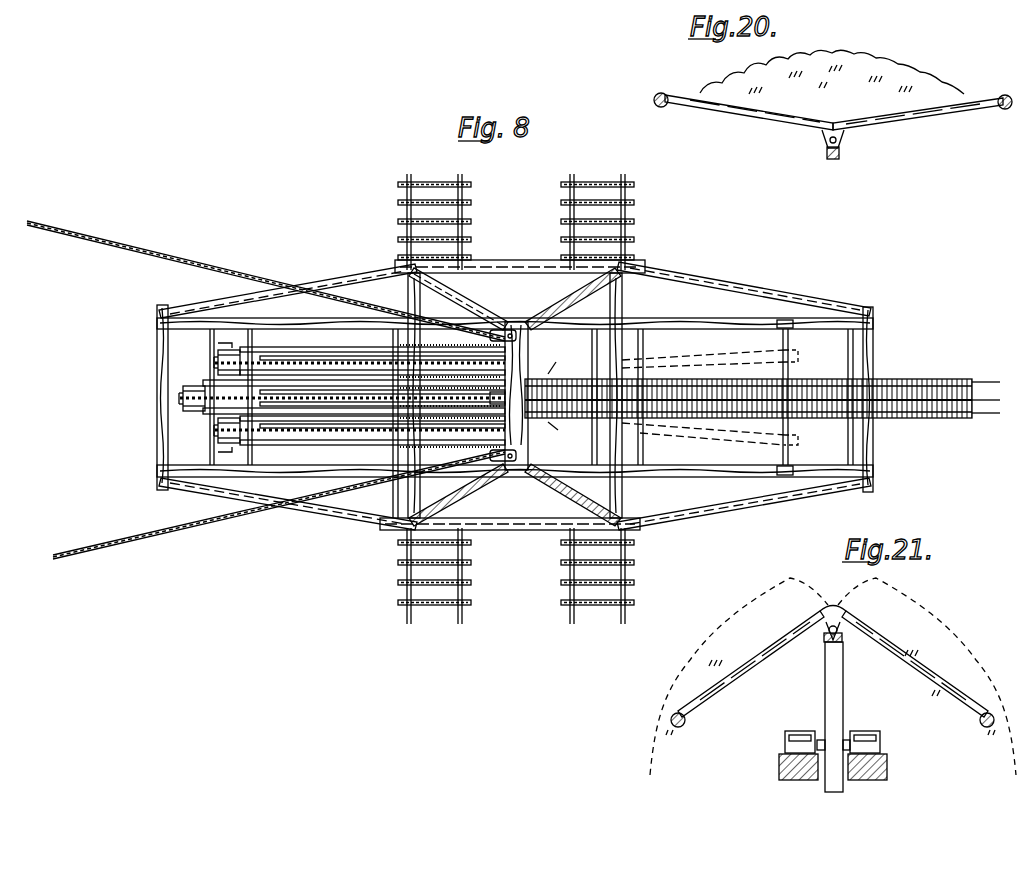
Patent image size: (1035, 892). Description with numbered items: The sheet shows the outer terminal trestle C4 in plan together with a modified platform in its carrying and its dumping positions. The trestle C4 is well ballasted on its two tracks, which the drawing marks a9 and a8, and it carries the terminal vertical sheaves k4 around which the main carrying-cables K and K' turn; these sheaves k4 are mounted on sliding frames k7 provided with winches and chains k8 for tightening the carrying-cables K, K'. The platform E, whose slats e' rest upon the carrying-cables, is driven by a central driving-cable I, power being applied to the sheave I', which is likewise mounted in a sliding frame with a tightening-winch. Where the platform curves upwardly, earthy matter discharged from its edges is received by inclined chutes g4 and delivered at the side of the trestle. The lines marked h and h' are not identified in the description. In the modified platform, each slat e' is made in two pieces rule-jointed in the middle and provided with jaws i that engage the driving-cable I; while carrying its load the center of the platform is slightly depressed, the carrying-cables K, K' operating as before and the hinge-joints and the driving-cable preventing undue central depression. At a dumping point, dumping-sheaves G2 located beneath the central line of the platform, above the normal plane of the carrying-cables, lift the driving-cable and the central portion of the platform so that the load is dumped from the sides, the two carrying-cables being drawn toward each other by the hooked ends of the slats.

In FIG. 8, the hoisting rope h is at (266, 390).
In FIG. 8, the rope end h' is at (992, 374).
In FIG. 8, the tightening winches and chains k8 is at (218, 360).
In FIG. 8, the terminal vertical sheaves k4 is at (430, 362).
In FIG. 8, the sliding frames k7 is at (492, 335).
In FIG. 8, the driving-cable sheave I' is at (428, 428).
In FIG. 8, the main carrying-cable K' is at (559, 358).
In FIG. 20, the main carrying-cable K' is at (1003, 118).
In FIG. 21, the main carrying-cable K' is at (971, 734).
In FIG. 8, the main carrying-cable K is at (782, 429).
In FIG. 20, the main carrying-cable K is at (657, 118).
In FIG. 21, the main carrying-cable K is at (687, 730).
In FIG. 8, the inclined chutes g4 is at (722, 399).
In FIG. 8, the platform E is at (748, 389).
In FIG. 8, the driving-cable I is at (990, 400).
In FIG. 20, the driving-cable I is at (828, 171).
In FIG. 21, the driving-cable I is at (841, 652).
In FIG. 8, the outer terminal trestle C4 is at (515, 397).
In FIG. 8, the left track a9 is at (434, 403).
In FIG. 8, the right track a8 is at (597, 403).
In FIG. 20, the slats e' is at (834, 119).
In FIG. 21, the slats e' is at (833, 662).
In FIG. 20, the jaws i is at (840, 153).
In FIG. 21, the jaws i is at (816, 641).
In FIG. 21, the dumping-sheaves G2 is at (843, 698).